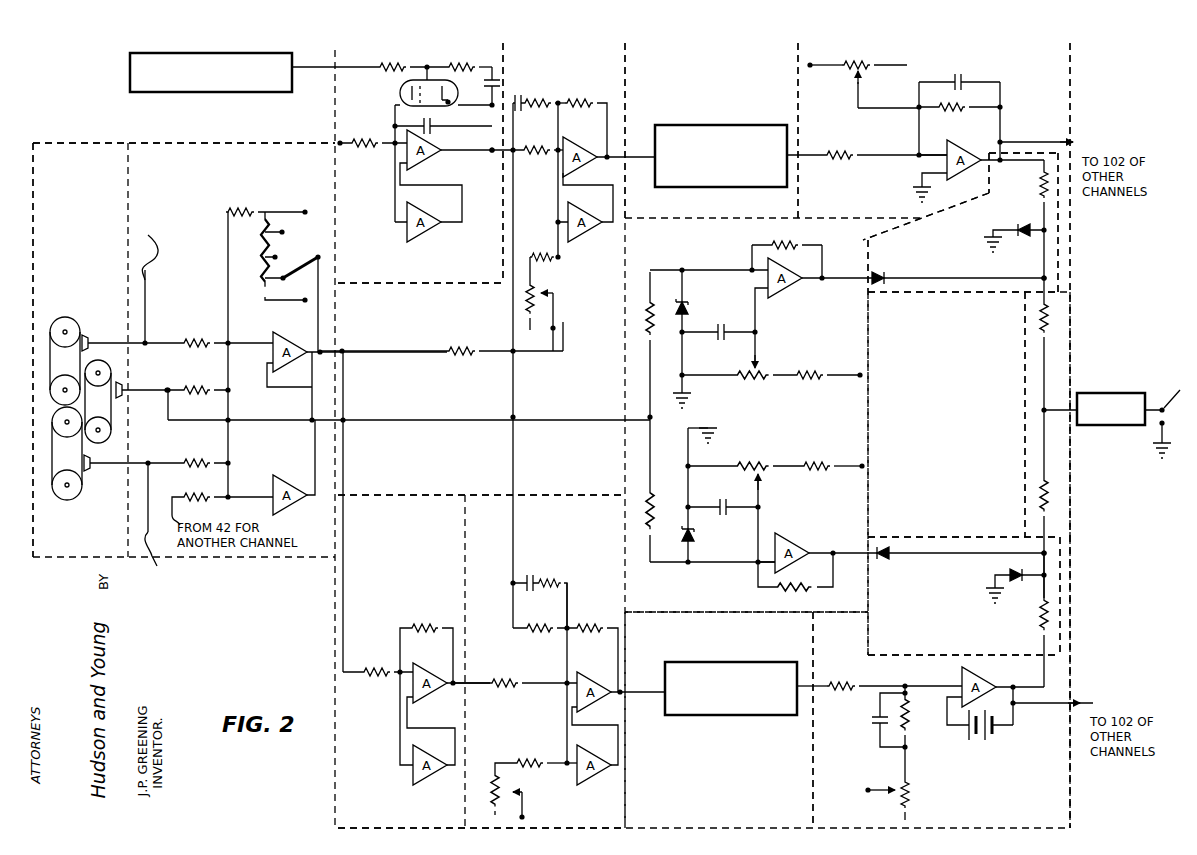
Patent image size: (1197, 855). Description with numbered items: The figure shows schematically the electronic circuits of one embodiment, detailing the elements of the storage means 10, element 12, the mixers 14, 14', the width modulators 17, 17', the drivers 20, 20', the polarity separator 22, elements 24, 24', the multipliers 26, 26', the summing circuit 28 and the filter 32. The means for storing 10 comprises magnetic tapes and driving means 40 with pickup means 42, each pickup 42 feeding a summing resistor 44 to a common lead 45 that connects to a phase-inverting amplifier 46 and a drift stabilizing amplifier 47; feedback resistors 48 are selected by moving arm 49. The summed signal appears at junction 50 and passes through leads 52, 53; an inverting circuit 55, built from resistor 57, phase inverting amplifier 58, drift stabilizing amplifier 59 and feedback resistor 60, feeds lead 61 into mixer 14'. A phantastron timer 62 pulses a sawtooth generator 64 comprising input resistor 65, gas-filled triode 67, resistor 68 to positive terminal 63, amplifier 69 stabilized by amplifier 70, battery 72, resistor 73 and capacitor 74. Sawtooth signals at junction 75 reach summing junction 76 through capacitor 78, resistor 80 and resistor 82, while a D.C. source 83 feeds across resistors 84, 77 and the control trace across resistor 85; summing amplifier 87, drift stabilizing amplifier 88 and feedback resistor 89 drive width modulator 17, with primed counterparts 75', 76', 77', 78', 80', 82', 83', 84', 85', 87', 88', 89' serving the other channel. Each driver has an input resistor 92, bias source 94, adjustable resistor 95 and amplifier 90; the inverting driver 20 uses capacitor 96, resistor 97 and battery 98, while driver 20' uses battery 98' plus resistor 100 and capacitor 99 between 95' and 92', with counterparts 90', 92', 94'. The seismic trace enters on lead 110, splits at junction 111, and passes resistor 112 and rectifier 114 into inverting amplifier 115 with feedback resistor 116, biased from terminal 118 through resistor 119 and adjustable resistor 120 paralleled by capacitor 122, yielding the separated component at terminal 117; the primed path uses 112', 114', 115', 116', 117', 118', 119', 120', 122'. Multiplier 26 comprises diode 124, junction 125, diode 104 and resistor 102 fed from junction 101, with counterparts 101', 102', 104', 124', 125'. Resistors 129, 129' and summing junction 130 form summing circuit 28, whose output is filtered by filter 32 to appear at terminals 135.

The means for storing 10 is at (45, 306).
The element of the system 12 is at (204, 140).
The mixer 14 is at (711, 130).
The mixer 14' is at (719, 720).
The width modulator 17 is at (715, 143).
The width modulator 17' is at (746, 699).
The inverting driver 20 is at (1100, 435).
The non-inverting driver 20' is at (1100, 682).
The polarity separator 22 is at (825, 473).
The element of the system 24 is at (825, 473).
The element of the system 24' is at (825, 473).
The multiplier 26 is at (989, 222).
The multiplier 26' is at (994, 596).
The summing circuit 28 is at (1069, 388).
The filter 32 is at (1103, 393).
The magnetic tapes and driving means 40 is at (50, 328).
The pickup and transducing means 42 is at (89, 338).
The summing resistor 44 is at (210, 340).
The common lead 45 is at (224, 366).
The phase-inverting amplifier 46 is at (304, 328).
The drift stabilizing amplifier 47 is at (272, 486).
The feedback resistors 48 is at (288, 242).
The arm 49 is at (310, 260).
The junction 50 is at (345, 348).
The lead 52 is at (374, 351).
The lead 53 is at (345, 392).
The inverting circuit 55 is at (421, 825).
The resistor 57 is at (386, 680).
The phase inverting amplifier 58 is at (430, 690).
The drift stabilizing amplifier 59 is at (418, 752).
The feedback resistor 60 is at (434, 624).
The lead 61 is at (470, 683).
The phantastron timer 62 is at (128, 62).
The positive terminal 63 is at (341, 142).
The sawtooth generator 64 is at (328, 138).
The input resistor 65 is at (397, 66).
The gas-filled triode 67 is at (405, 91).
The resistor 68 is at (355, 141).
The amplifier 69 is at (444, 151).
The drift stabilizing amplifier 70 is at (433, 230).
The battery 72 is at (497, 80).
The resistor 73 is at (462, 66).
The capacitor 74 is at (433, 125).
The junction 75 is at (488, 159).
The junction 75' is at (494, 365).
The summing junction 76 is at (541, 160).
The summing junction 76' is at (586, 673).
The summing resistor 77 is at (525, 304).
The summing resistor 77' is at (515, 783).
The capacitor 78 is at (544, 115).
The capacitor 78' is at (538, 572).
The resistor 80 is at (526, 93).
The resistor 80' is at (564, 596).
The resistor 82 is at (532, 177).
The resistor 82' is at (544, 640).
The source of D.C. potential 83 is at (577, 322).
The source of D.C. potential 83' is at (543, 804).
The summing resistor 84 is at (538, 245).
The summing resistor 84' is at (544, 753).
The summing resistor 85 is at (473, 361).
The summing resistor 85' is at (533, 673).
The summing amplifier 87 is at (605, 181).
The summing amplifier 87' is at (621, 684).
The drift stabilizing amplifier 88 is at (585, 212).
The drift stabilizing amplifier 88' is at (616, 746).
The feedback resistor 89 is at (586, 116).
The feedback resistor 89' is at (595, 658).
The amplifier 90 is at (996, 142).
The amplifier 90' is at (999, 709).
The input resistor 92 is at (867, 145).
The input resistor 92' is at (867, 669).
The source of D.C. bias 94 is at (825, 62).
The source of D.C. bias 94' is at (861, 789).
The adjustable resistor 95 is at (880, 73).
The adjustable resistor 95' is at (927, 800).
The capacitor 96 is at (966, 81).
The resistor 97 is at (971, 107).
The 1.5 volt battery 98 is at (903, 180).
The 1.5 volt battery 98' is at (1008, 738).
The capacitor 99 is at (876, 727).
The resistor 100 is at (910, 724).
The junction 101 is at (1032, 132).
The junction 101' is at (1031, 675).
The resistor 102 is at (1022, 220).
The resistor 102' is at (1023, 620).
The diode 104 is at (1014, 221).
The diode 104' is at (1015, 595).
The lead 110 is at (148, 302).
The junction 111 is at (648, 419).
The resistor 112 is at (700, 332).
The resistor 112' is at (686, 527).
The rectifier 114 is at (702, 339).
The rectifier 114' is at (716, 496).
The low impedance inverting amplifier 115 is at (813, 313).
The low impedance inverting amplifier 115' is at (817, 548).
The resistor 116 is at (795, 250).
The resistor 116' is at (789, 581).
The terminal 117 is at (865, 258).
The terminal 117' is at (852, 542).
The terminal 118 is at (881, 377).
The terminal 118' is at (882, 471).
The resistor 119 is at (828, 364).
The resistor 119' is at (820, 477).
The adjustable resistor 120 is at (744, 360).
The adjustable resistor 120' is at (745, 467).
The capacitor 122 is at (720, 343).
The capacitor 122' is at (724, 530).
The diode 124 is at (958, 271).
The diode 124' is at (962, 560).
The junction 125 is at (1010, 299).
The junction 125' is at (1078, 561).
The resistor 129 is at (1073, 344).
The resistor 129' is at (1078, 504).
The summing junction 130 is at (1040, 410).
The terminals 135 is at (1181, 386).